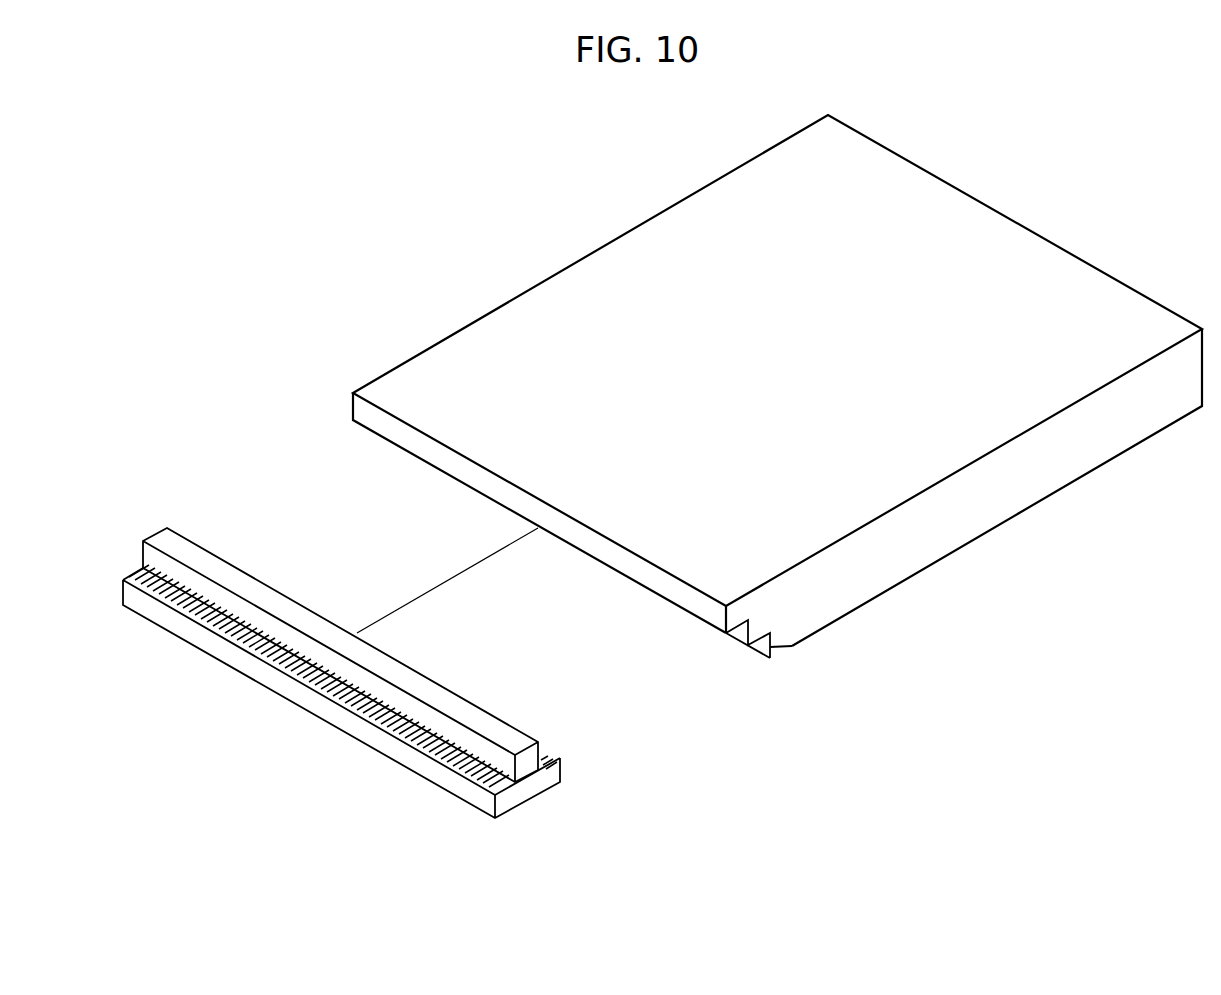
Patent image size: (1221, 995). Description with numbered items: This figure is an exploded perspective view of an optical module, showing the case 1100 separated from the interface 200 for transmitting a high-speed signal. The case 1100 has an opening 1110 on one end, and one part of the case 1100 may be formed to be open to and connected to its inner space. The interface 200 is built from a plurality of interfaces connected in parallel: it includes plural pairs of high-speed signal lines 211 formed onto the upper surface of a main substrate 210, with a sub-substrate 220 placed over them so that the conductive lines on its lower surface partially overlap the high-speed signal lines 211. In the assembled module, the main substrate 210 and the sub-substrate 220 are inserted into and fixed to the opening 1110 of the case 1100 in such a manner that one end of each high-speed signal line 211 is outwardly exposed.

The case 1100 is at (964, 204).
The opening 1110 is at (792, 646).
The interface 200 is at (361, 653).
The main substrate 210 is at (341, 698).
The high-speed signal lines 211 is at (478, 790).
The sub-substrate 220 is at (187, 531).